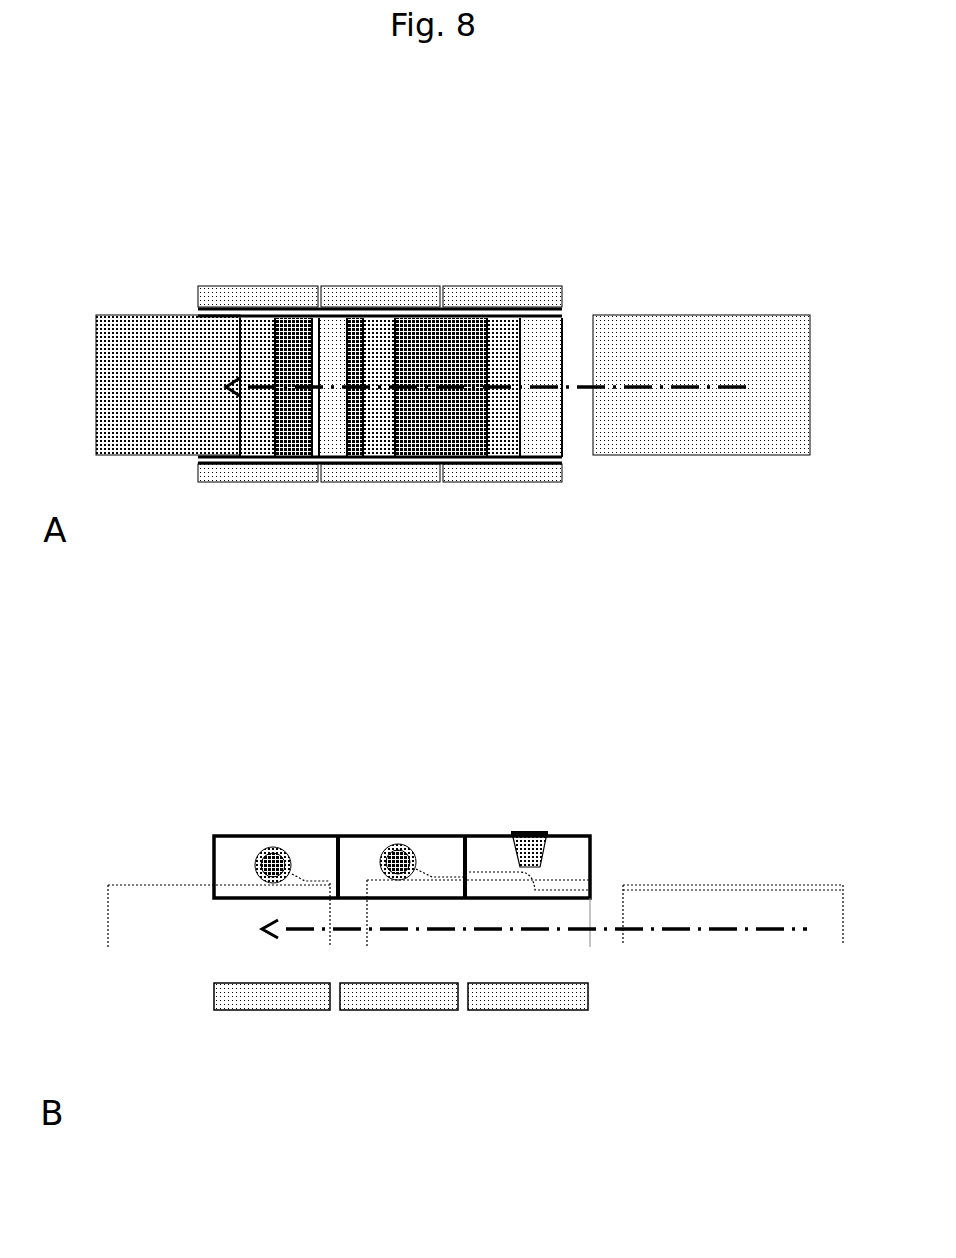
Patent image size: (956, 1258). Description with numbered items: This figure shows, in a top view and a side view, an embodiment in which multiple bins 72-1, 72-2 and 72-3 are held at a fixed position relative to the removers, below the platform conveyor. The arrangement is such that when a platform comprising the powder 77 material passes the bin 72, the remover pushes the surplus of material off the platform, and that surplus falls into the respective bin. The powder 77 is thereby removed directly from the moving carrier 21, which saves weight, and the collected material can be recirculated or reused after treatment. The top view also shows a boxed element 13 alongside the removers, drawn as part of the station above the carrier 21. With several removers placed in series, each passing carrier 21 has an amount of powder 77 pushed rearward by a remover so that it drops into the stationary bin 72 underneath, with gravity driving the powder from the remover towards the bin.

The bin 72 is at (500, 283).
The sensor module 13 is at (505, 348).
The moving carrier 21 is at (768, 312).
The powder 77 is at (473, 876).
The bin 72-1 is at (276, 999).
The bin 72-2 is at (380, 999).
The bin 72-3 is at (515, 999).